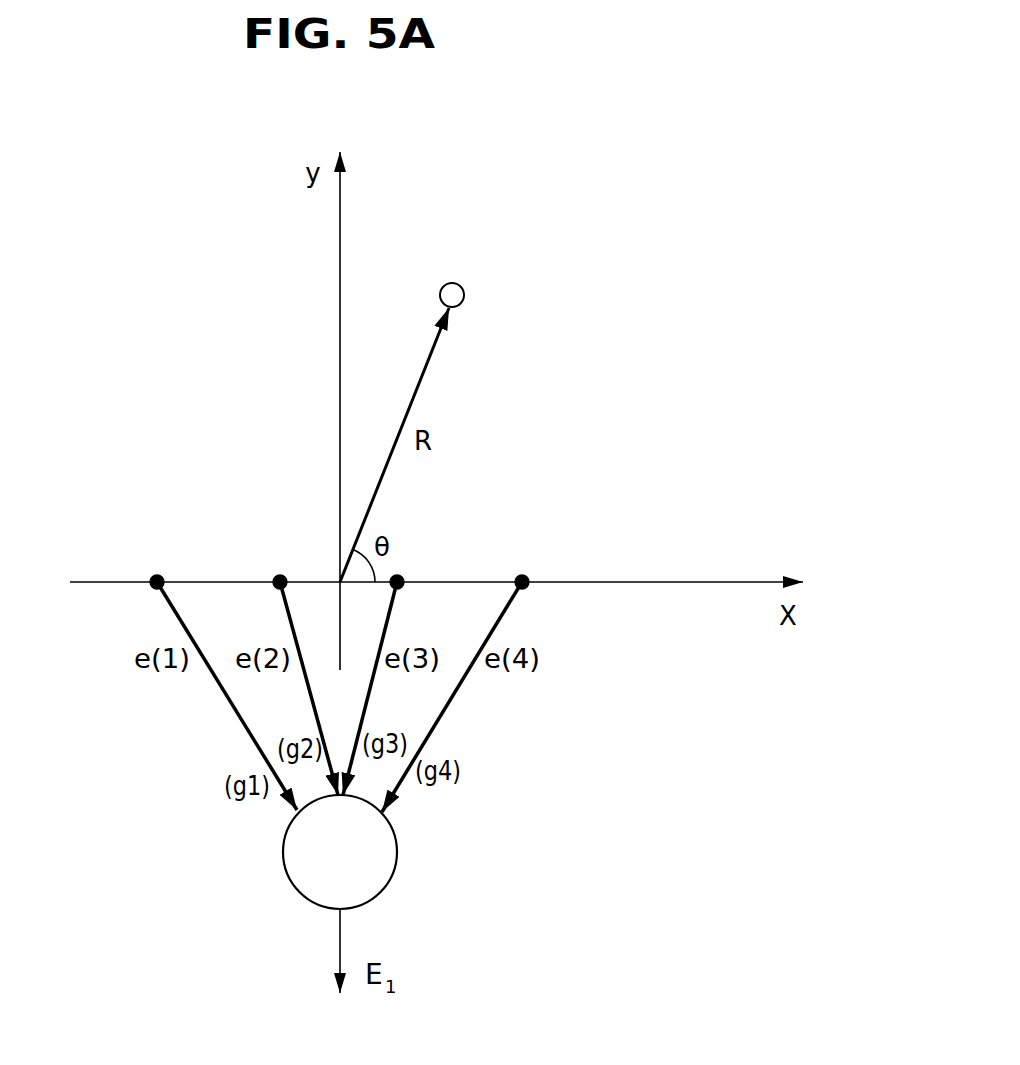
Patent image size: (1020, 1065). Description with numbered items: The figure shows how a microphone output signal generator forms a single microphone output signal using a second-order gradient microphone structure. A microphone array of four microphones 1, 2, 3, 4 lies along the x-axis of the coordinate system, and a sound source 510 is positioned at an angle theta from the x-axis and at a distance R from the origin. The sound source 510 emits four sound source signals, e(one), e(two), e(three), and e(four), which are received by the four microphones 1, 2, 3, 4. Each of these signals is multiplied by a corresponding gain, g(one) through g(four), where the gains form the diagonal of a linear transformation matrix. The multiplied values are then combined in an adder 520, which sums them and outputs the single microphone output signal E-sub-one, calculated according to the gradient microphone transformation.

The first microphone 1 is at (155, 565).
The second microphone 2 is at (280, 565).
The third microphone 3 is at (412, 565).
The fourth microphone 4 is at (525, 565).
The sound source 510 is at (577, 289).
The adder 520 is at (397, 852).